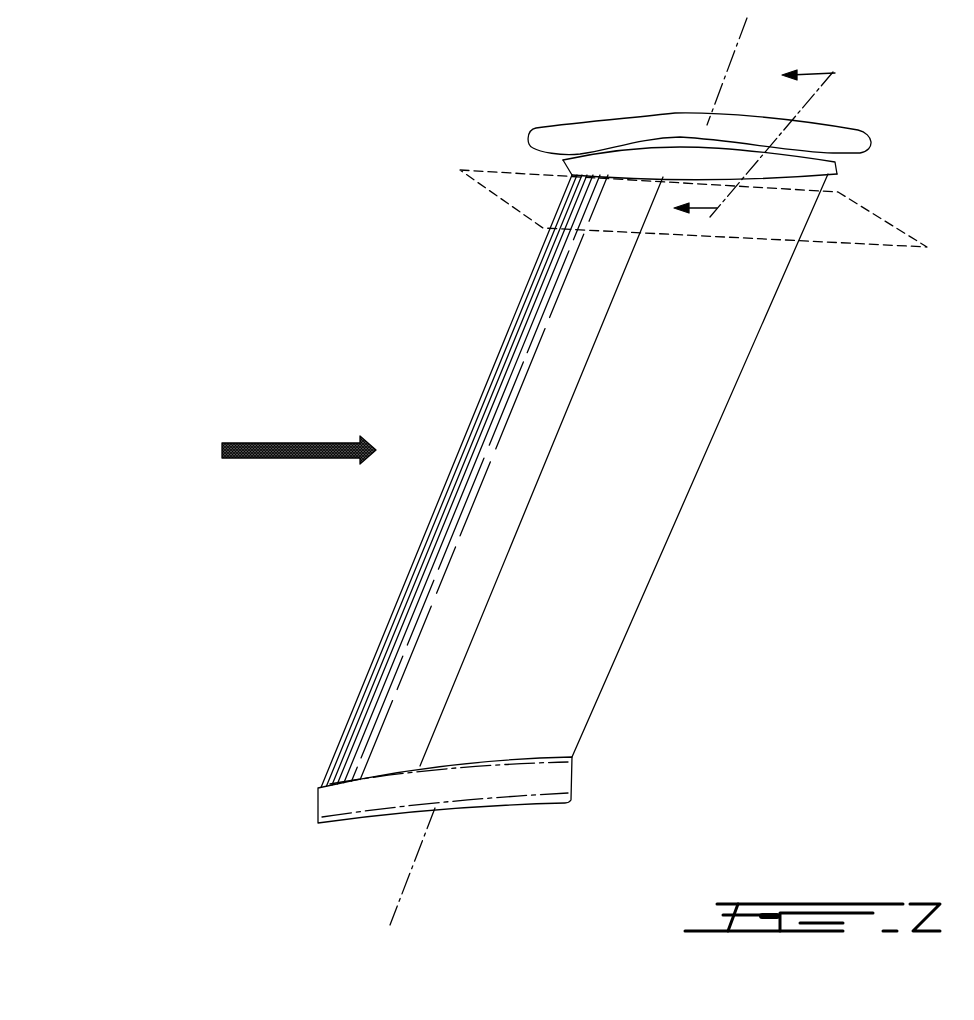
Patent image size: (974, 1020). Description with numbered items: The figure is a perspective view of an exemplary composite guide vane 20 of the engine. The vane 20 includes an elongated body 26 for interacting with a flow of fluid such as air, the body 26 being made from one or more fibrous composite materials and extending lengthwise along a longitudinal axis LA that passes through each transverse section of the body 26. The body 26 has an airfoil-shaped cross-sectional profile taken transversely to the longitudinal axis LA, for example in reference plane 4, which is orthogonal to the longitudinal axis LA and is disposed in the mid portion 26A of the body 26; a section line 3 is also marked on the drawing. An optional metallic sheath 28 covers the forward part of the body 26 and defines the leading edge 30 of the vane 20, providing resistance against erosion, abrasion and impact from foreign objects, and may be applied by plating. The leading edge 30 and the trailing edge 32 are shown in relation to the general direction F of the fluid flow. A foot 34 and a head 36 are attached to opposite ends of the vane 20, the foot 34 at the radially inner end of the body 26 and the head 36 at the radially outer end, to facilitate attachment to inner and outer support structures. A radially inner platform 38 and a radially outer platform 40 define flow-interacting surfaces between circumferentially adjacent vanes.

The vane 20 is at (290, 175).
The body 26 is at (586, 480).
The mid portion 26A is at (653, 405).
The metallic sheath 28 is at (505, 383).
The leading edge 30 is at (375, 655).
The trailing edge 32 is at (755, 332).
The foot 34 is at (393, 814).
The head 36 is at (832, 140).
The radially inner platform 38 is at (337, 798).
The radially outer platform 40 is at (813, 175).
The section line 3- 3 is at (765, 148).
The reference plane 4 is at (482, 167).
The longitudinal axis LA is at (730, 60).
The general direction of the flow of fluid F is at (258, 452).